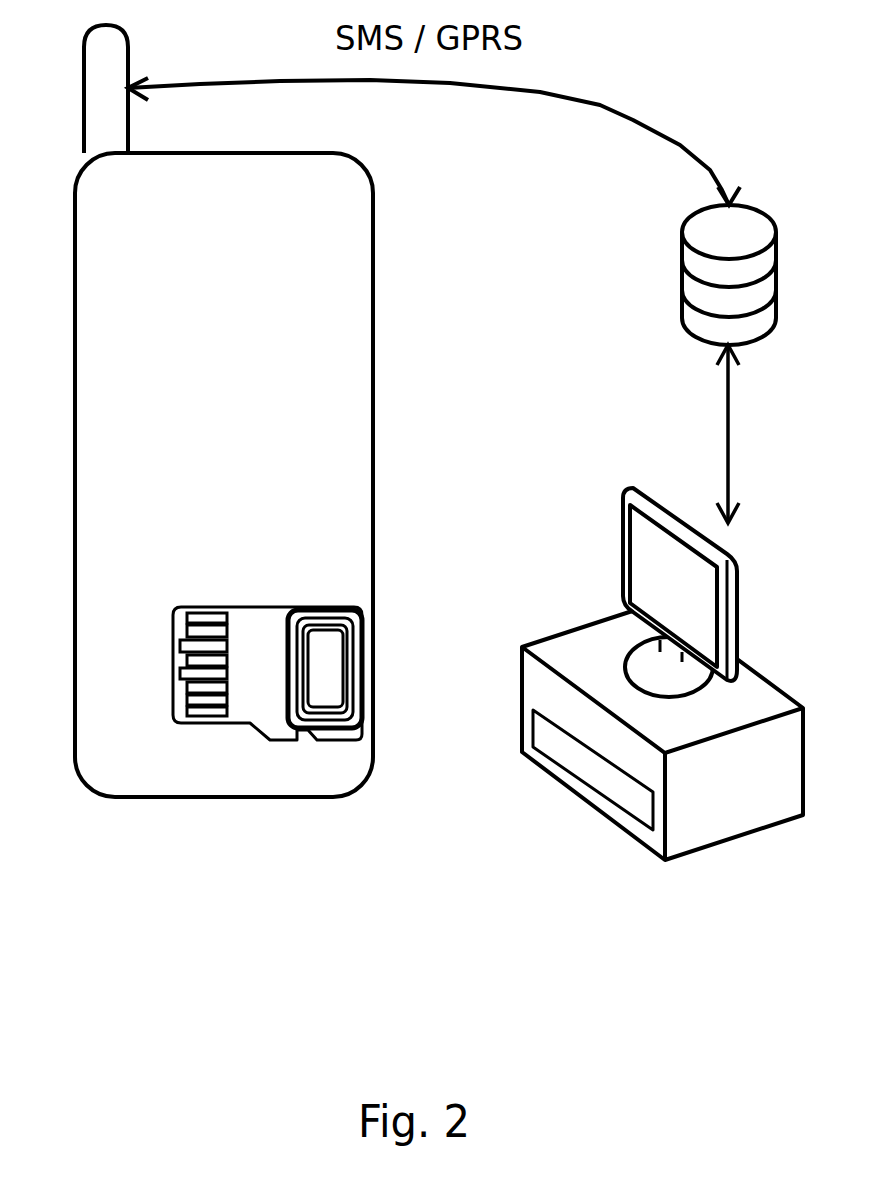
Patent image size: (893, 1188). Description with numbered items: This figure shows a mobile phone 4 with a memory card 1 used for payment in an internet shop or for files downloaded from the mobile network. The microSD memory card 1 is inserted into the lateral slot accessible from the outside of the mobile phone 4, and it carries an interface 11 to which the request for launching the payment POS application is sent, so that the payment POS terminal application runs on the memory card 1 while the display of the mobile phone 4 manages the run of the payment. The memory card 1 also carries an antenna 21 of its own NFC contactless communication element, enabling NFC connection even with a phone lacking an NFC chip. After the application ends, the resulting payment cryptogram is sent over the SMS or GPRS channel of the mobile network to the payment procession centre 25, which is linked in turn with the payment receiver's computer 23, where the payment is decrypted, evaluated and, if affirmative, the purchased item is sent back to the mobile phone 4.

The mobile phone 4 is at (103, 713).
The memory card 1 is at (262, 700).
The interface 11 is at (207, 698).
The antenna 21 is at (332, 713).
The payment procession centre 25 is at (682, 283).
The payment receiver's computer 23 is at (603, 775).